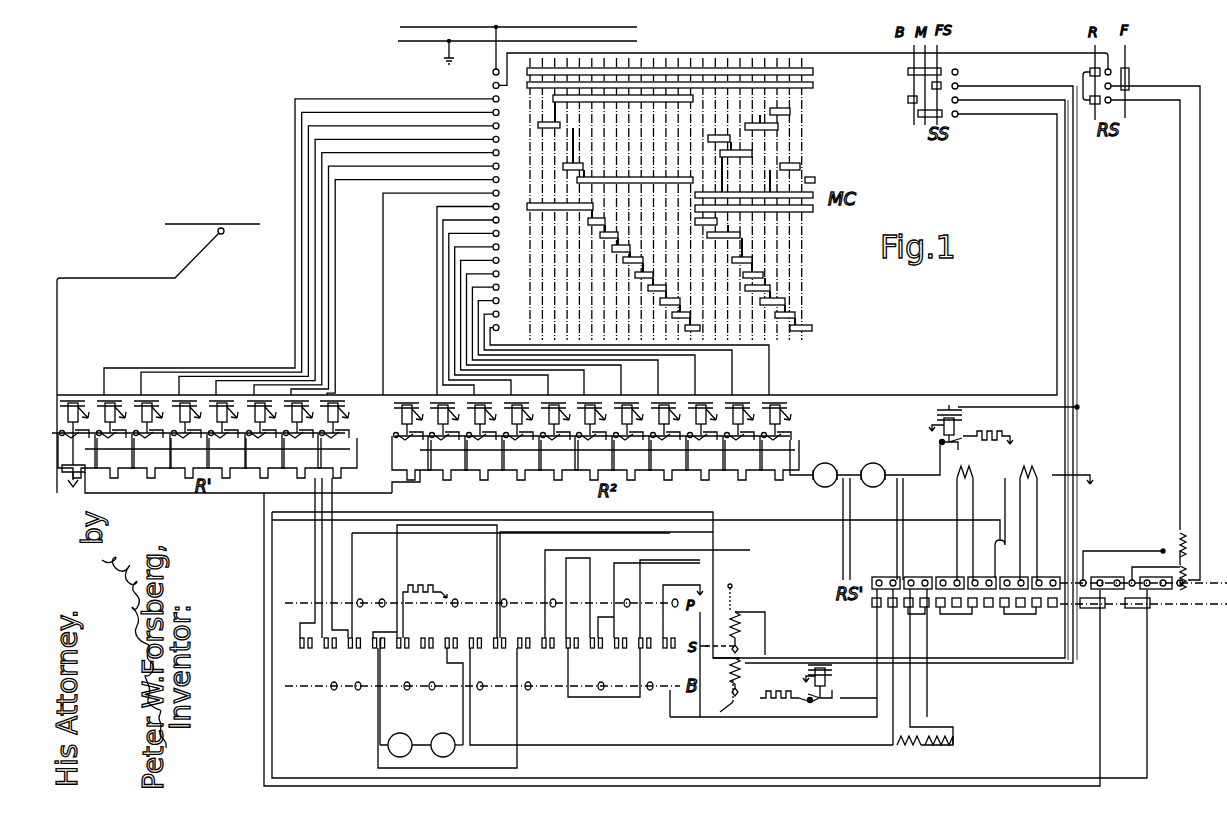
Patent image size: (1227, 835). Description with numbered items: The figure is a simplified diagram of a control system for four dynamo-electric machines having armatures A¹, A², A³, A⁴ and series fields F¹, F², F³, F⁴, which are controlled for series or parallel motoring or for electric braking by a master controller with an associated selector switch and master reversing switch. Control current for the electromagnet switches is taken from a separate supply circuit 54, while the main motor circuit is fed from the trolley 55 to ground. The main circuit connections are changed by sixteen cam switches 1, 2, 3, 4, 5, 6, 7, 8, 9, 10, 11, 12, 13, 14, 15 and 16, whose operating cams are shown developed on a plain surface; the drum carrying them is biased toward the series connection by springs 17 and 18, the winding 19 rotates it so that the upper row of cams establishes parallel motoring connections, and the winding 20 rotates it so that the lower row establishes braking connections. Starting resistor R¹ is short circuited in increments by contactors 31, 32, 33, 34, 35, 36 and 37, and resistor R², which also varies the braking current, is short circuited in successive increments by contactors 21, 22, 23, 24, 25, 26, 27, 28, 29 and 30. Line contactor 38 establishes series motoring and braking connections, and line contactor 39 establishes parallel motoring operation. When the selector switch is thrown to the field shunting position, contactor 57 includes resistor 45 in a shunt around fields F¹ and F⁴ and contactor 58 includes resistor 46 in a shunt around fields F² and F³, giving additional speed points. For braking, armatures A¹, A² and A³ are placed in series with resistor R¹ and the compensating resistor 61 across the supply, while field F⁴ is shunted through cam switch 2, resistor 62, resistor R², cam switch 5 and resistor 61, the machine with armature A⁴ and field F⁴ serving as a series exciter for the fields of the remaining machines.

The cam switch 1 is at (306, 653).
The cam switch 2 is at (329, 653).
The cam switch 3 is at (354, 653).
The cam switch 4 is at (377, 653).
The cam switch 5 is at (402, 653).
The cam switch 6 is at (426, 653).
The cam switch 7 is at (452, 632).
The cam switch 8 is at (476, 653).
The cam switch 9 is at (500, 653).
The cam switch 10 is at (530, 653).
The cam switch 11 is at (553, 653).
The cam switch 12 is at (576, 633).
The cam switch 13 is at (594, 653).
The cam switch 14 is at (620, 653).
The cam switch 15 is at (648, 633).
The cam switch 16 is at (673, 633).
The spring 17 is at (740, 595).
The spring 18 is at (716, 698).
The winding 19 is at (750, 672).
The winding 20 is at (748, 622).
The contactor 21 is at (447, 441).
The contactor 22 is at (484, 441).
The contactor 23 is at (521, 441).
The contactor 24 is at (558, 441).
The contactor 25 is at (594, 441).
The contactor 26 is at (631, 441).
The contactor 27 is at (668, 441).
The contactor 28 is at (705, 441).
The contactor 29 is at (742, 441).
The contactor 30 is at (779, 441).
The contactor 31 is at (114, 439).
The contactor 32 is at (151, 439).
The contactor 33 is at (189, 439).
The contactor 34 is at (226, 439).
The contactor 35 is at (264, 439).
The contactor 36 is at (301, 439).
The contactor 37 is at (337, 439).
The line contactor 38 is at (76, 397).
The line contactor 39 is at (407, 398).
The resistor 45 is at (992, 430).
The resistor 46 is at (780, 705).
The supply circuit 54 is at (500, 43).
The trolley 55 is at (205, 252).
The contactor 57 is at (949, 405).
The contactor 58 is at (820, 665).
The compensating resistor 61 is at (421, 583).
The resistor 62 is at (422, 482).